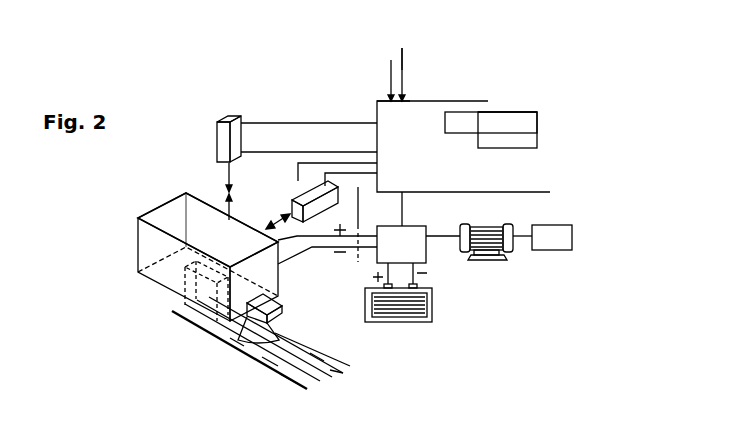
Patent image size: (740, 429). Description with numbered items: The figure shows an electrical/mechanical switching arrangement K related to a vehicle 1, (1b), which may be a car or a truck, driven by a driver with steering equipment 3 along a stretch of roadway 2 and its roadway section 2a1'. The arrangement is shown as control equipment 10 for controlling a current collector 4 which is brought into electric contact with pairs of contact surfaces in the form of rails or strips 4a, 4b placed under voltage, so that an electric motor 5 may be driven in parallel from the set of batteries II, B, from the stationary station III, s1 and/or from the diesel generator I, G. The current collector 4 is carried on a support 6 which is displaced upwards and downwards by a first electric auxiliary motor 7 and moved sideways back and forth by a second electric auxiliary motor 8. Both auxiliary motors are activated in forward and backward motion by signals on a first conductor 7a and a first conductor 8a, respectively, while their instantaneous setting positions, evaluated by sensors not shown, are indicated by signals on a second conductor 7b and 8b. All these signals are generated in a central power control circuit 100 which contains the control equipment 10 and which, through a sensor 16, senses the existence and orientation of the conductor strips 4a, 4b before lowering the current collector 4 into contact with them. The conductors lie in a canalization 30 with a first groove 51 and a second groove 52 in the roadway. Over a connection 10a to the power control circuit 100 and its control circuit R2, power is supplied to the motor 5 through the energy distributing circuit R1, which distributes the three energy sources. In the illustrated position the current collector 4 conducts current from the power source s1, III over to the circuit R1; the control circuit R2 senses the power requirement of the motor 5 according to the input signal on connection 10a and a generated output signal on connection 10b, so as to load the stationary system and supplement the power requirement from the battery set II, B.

The vehicle 1 is at (243, 108).
The truck 1b is at (202, 109).
The stretch of roadway 2 is at (180, 320).
The roadway section 2a1' is at (357, 387).
The steering equipment 3 is at (468, 127).
The current collector 4 is at (183, 303).
The first rail 4a is at (237, 342).
The second rail 4b is at (317, 357).
The electric motor 5 is at (482, 227).
The support 6 is at (201, 231).
The first electric auxiliary motor 7 is at (217, 136).
The first conductor 7a is at (320, 150).
The second conductor 7b is at (350, 123).
The second electric auxiliary motor 8 is at (292, 206).
The first conductor 8a is at (298, 174).
The second conductor 8b is at (357, 174).
The control equipment 10 is at (533, 143).
The connection 10a is at (378, 87).
The connection 10b is at (402, 212).
The sensor 16 is at (283, 308).
The canalization 30 is at (270, 362).
The first groove 51 is at (308, 398).
The second groove 52 is at (308, 398).
The power control circuit 100 is at (447, 100).
The energy distributing circuit R1 is at (425, 255).
The control circuit R2 is at (520, 110).
The diesel generator G is at (389, 64).
The first power source I is at (402, 60).
The second power source II is at (400, 338).
The third power source III is at (185, 353).
The switching arrangement K is at (207, 210).
The set of batteries B is at (440, 303).
The stationary station s1 is at (292, 350).